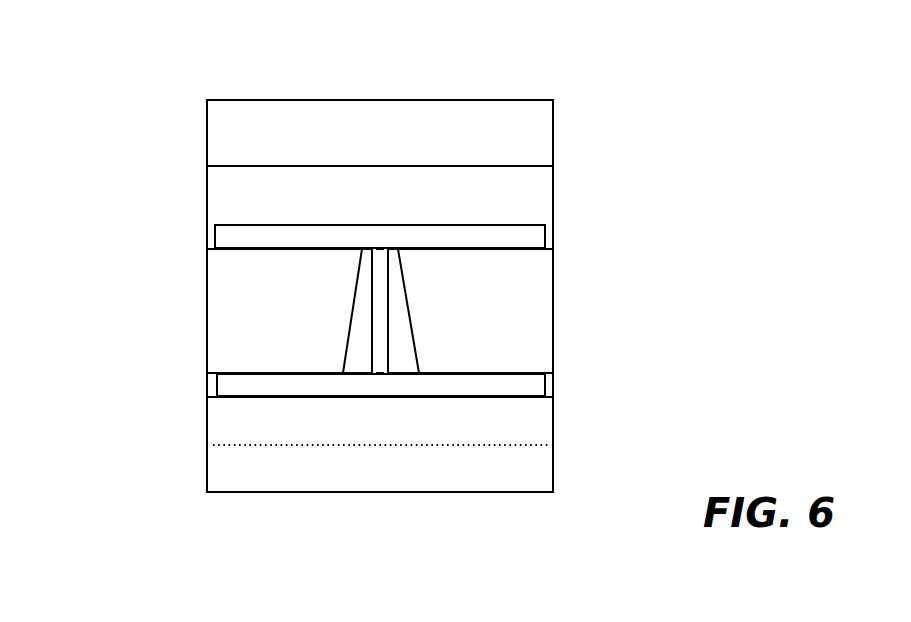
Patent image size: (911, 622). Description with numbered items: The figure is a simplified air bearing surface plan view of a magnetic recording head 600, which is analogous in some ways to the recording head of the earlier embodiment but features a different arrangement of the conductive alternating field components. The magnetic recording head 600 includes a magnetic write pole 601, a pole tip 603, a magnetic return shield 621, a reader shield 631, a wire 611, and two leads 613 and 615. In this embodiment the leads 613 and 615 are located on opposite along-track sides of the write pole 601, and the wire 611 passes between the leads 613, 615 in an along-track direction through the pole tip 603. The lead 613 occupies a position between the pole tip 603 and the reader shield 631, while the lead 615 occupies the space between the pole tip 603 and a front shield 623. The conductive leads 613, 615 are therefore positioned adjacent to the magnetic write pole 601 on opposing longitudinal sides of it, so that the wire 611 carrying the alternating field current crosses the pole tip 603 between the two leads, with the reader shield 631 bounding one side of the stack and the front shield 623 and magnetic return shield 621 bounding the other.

The magnetic recording head 600 is at (92, 74).
The reader shield 631 is at (207, 150).
The lead 613 is at (207, 238).
The magnetic write pole 601 is at (198, 303).
The pole tip 603 is at (340, 303).
The wire 611 is at (400, 336).
The lead 615 is at (553, 385).
The front shield 623 is at (207, 416).
The magnetic return shield 621 is at (198, 459).